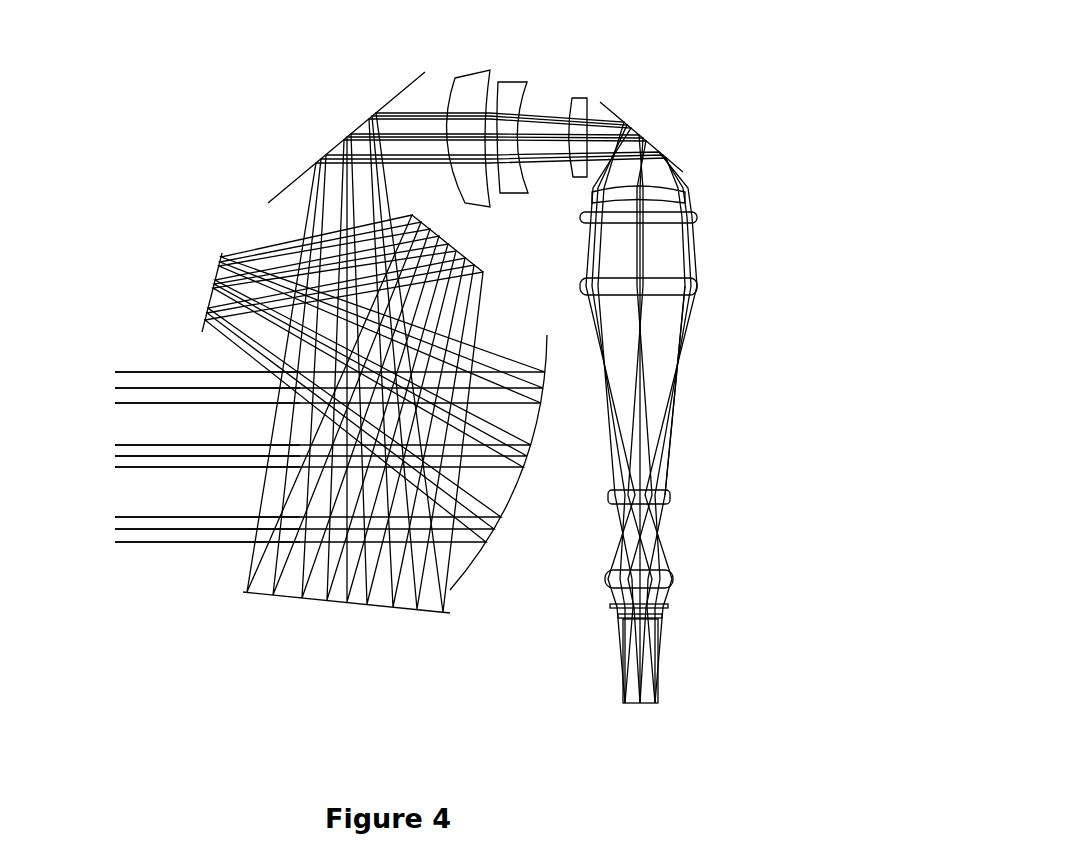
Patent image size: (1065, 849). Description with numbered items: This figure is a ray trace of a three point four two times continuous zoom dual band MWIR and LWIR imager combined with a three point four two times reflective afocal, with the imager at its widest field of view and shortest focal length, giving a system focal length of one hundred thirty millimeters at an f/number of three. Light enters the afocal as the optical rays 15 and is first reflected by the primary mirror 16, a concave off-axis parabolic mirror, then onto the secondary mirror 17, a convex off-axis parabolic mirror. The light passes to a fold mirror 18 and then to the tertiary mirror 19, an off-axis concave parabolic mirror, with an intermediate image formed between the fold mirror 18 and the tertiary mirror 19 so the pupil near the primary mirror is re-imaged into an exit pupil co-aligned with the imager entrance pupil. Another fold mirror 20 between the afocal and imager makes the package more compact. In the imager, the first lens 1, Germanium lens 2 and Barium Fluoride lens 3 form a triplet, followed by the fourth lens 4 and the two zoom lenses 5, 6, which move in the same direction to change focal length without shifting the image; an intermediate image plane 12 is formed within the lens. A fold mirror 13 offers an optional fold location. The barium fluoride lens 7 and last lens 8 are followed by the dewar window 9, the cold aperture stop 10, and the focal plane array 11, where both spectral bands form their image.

The first lens 1 is at (490, 70).
The Germanium lens 2 is at (520, 82).
The Barium Fluoride lens 3 is at (583, 96).
The fourth lens 4 is at (685, 188).
The first zoom lens 5 is at (697, 217).
The second zoom lens 6 is at (697, 287).
The barium fluoride lens 7 is at (670, 493).
The last lens 8 is at (672, 578).
The dewar window 9 is at (668, 606).
The aperture stop 10 is at (665, 618).
The focal plane array 11 is at (650, 704).
The intermediate image plane 12 is at (687, 317).
The fold mirror 13 is at (638, 132).
The optical rays 15 is at (117, 523).
The primary mirror 16 is at (505, 500).
The secondary mirror 17 is at (210, 300).
The fold mirror 18 is at (457, 225).
The tertiary mirror 19 is at (383, 613).
The fold mirror 20 is at (395, 92).